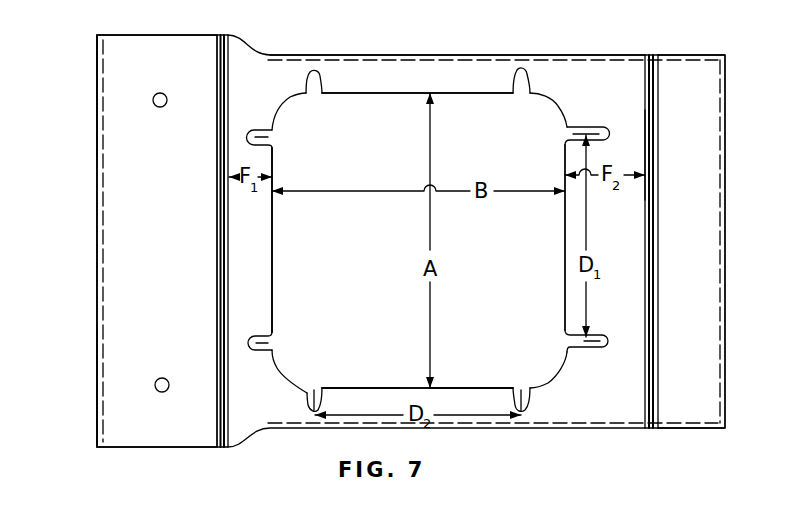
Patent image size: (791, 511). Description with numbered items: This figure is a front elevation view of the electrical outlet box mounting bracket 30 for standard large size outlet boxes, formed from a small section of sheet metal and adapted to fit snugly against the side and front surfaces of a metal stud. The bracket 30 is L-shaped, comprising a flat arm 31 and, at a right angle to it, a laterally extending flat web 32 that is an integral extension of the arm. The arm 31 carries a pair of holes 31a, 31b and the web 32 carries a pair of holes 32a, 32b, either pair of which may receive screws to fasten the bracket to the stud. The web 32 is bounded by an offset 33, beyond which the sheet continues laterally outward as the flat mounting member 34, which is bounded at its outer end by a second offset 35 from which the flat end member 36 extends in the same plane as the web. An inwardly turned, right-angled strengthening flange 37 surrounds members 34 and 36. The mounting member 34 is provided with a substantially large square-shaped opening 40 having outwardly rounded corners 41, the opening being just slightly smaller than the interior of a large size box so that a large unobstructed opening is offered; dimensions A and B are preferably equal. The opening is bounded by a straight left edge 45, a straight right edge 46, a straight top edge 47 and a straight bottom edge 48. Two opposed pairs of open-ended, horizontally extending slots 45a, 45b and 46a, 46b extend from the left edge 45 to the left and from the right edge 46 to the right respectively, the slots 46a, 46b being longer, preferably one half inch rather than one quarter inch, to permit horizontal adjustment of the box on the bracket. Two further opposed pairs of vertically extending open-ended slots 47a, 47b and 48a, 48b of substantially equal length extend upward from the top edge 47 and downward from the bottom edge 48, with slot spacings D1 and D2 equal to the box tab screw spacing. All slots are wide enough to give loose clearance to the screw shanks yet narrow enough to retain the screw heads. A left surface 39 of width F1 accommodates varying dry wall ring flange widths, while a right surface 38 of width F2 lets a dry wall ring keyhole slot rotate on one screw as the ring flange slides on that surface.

The electrical outlet box mounting bracket 30 is at (293, 435).
The flat arm 31 is at (103, 58).
The hole 31a is at (97, 97).
The hole 31b is at (100, 374).
The flat web 32 is at (163, 56).
The hole 32a is at (163, 107).
The hole 32b is at (162, 378).
The offset 33 is at (225, 63).
The flat mounting member 34 is at (453, 73).
The offset 35 is at (648, 212).
The flat end member 36 is at (710, 223).
The strengthening flange 37 is at (518, 53).
The right surface 38 is at (630, 152).
The left surface 39 is at (260, 238).
The square-shape opening 40 is at (310, 298).
The outwardly rounded corners 41 is at (281, 108).
The straight left edge 45 is at (275, 259).
The slot 45a is at (274, 146).
The slot 45b is at (280, 350).
The straight right edge 46 is at (563, 242).
The slot 46a is at (583, 128).
The slot 46b is at (586, 345).
The straight top edge 47 is at (417, 97).
The slot 47a is at (315, 90).
The slot 47b is at (518, 95).
The straight bottom edge 48 is at (414, 380).
The slot 48a is at (330, 383).
The slot 48b is at (520, 388).